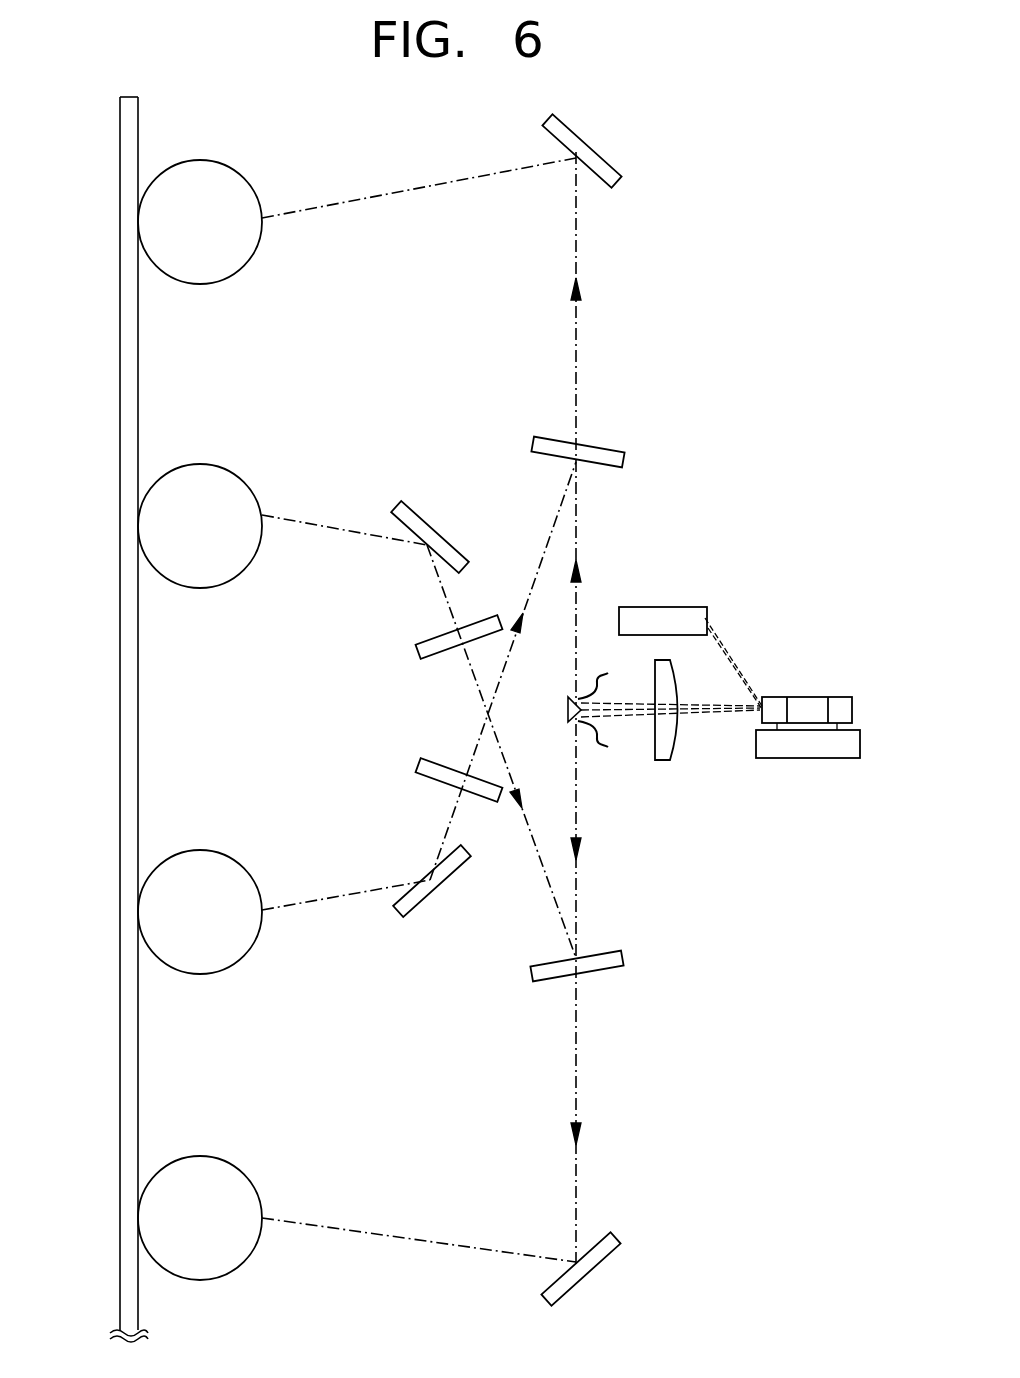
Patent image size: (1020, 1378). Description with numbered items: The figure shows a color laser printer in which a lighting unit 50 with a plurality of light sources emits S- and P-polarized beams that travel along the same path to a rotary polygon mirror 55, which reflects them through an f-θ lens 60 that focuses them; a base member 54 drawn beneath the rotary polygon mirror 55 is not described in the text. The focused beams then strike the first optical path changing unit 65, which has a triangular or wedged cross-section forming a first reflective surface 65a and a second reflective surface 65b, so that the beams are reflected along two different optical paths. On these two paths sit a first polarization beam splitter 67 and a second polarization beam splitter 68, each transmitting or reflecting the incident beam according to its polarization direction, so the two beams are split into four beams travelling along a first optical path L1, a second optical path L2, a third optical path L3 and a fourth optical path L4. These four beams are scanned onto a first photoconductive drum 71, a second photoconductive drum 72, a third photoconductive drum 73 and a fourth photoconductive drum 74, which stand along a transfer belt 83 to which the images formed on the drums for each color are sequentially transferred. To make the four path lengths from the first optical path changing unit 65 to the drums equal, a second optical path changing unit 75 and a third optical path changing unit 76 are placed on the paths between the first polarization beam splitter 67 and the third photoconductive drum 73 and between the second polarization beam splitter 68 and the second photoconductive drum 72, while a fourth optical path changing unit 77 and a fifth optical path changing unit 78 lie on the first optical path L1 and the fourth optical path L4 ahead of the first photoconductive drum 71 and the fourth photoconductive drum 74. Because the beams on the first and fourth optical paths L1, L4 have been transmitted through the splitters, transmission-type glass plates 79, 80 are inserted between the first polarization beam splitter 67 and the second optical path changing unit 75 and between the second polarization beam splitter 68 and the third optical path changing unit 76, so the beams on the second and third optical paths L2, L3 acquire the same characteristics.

The lighting unit 50 is at (676, 590).
The light source base 54 is at (807, 758).
The rotary polygon mirror 55 is at (807, 697).
The f-θ lens 60 is at (662, 762).
The first optical path changing unit 65 is at (566, 710).
The first reflective surface 65a is at (610, 672).
The second reflective surface 65b is at (611, 756).
The first polarization beam splitter 67 is at (596, 442).
The second polarization beam splitter 68 is at (596, 975).
The first photoconductive drum 71 is at (200, 160).
The second photoconductive drum 72 is at (200, 464).
The third photoconductive drum 73 is at (200, 850).
The fourth photoconductive drum 74 is at (200, 1156).
The second optical path changing unit 75 is at (425, 898).
The third optical path changing unit 76 is at (428, 521).
The fourth optical path changing unit 77 is at (592, 142).
The fifth optical path changing unit 78 is at (586, 1278).
The transmission-type glass plate 79 is at (416, 767).
The transmission-type glass plate 80 is at (414, 652).
The transfer belt 83 is at (120, 714).
The first optical path L1 is at (419, 185).
The second optical path L2 is at (503, 671).
The third optical path L3 is at (501, 751).
The fourth optical path L4 is at (419, 1227).